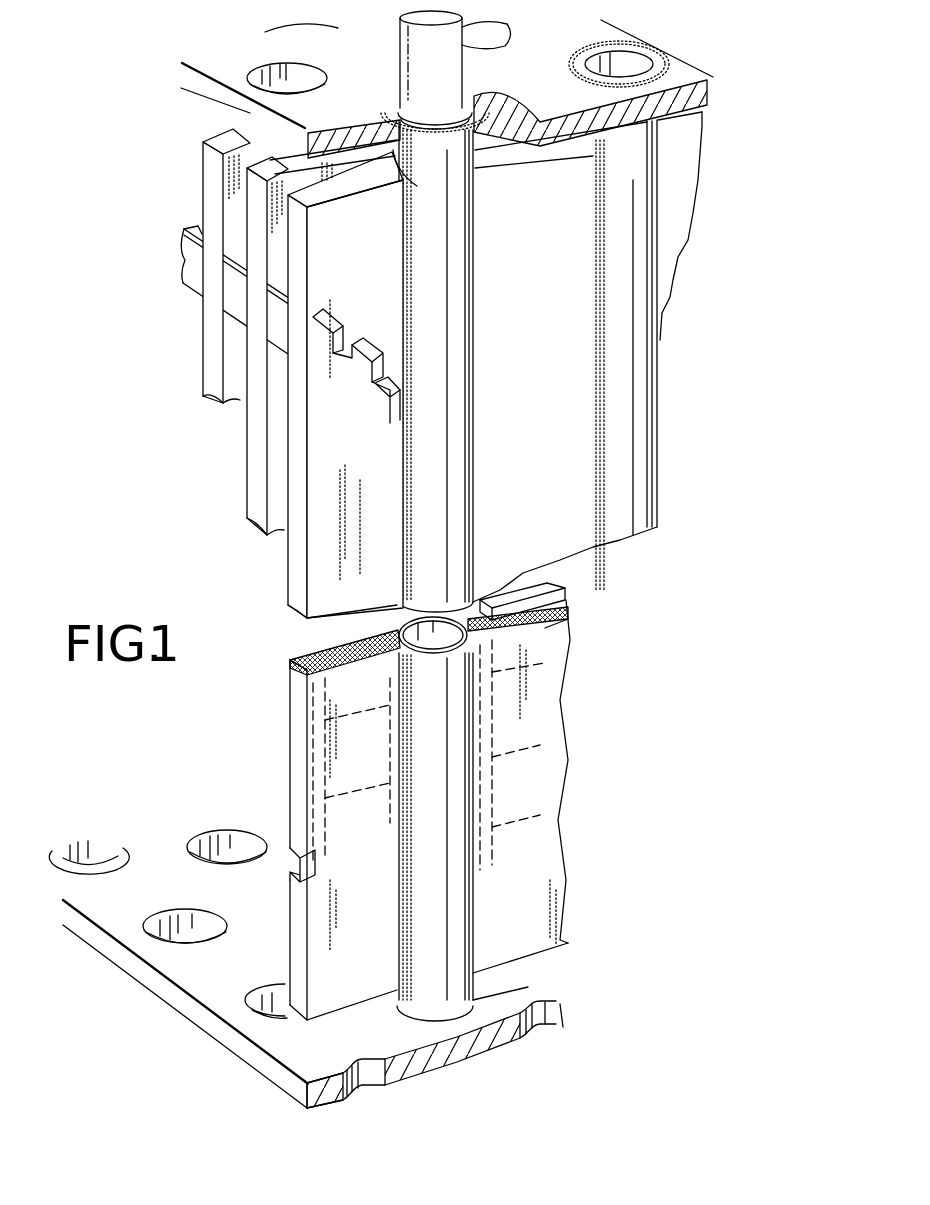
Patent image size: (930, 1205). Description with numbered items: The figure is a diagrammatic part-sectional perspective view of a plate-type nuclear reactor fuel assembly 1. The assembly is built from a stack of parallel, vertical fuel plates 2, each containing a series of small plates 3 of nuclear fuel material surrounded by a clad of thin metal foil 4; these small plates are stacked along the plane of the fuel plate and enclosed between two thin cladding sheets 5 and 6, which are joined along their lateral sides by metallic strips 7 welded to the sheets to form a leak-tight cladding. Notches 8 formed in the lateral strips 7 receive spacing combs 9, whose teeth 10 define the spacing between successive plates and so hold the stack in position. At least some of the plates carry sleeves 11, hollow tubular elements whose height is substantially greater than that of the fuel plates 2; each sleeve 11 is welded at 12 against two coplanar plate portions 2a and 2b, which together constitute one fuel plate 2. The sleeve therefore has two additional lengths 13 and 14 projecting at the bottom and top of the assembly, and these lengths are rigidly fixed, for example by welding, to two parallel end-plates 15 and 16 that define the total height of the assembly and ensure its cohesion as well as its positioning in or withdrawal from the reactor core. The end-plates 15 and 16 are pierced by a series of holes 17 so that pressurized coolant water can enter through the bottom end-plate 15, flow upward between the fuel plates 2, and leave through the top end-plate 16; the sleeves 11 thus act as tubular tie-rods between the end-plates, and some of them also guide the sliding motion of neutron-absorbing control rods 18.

The plate-type nuclear reactor fuel assembly 1 is at (661, 472).
The fuel plates 2 is at (297, 560).
The fuel plate portion 2a is at (362, 873).
The fuel plate portion 2b is at (525, 873).
The small plates of nuclear fuel material 3 is at (352, 647).
The thin metal foil 4 is at (500, 612).
The cladding sheet 5 is at (545, 628).
The cladding sheet 6 is at (320, 655).
The metallic strips 7 is at (290, 668).
The notches 8 is at (290, 862).
The spacing combs 9 is at (193, 287).
The teeth 10 is at (333, 323).
The sleeves 11 is at (470, 545).
The weld 12 is at (405, 190).
The additional sleeve length 13 is at (505, 968).
The additional sleeve length 14 is at (443, 143).
The bottom end-plate 15 is at (270, 1063).
The top end-plate 16 is at (250, 113).
The holes 17 is at (262, 65).
The control rods 18 is at (462, 60).